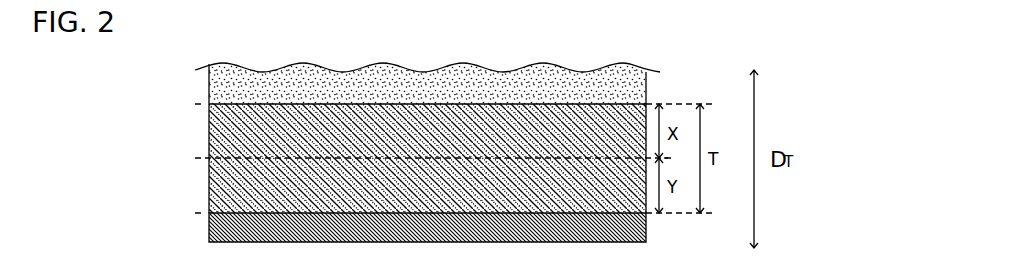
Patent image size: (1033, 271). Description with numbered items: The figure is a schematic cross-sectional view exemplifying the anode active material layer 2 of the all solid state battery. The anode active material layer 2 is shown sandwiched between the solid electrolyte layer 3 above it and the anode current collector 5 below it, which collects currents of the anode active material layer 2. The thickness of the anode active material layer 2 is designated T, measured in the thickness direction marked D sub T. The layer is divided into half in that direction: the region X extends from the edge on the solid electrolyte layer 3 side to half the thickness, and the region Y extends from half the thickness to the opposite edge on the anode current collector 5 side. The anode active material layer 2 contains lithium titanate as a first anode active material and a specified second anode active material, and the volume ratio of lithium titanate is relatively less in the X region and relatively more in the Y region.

The solid electrolyte layer 3 is at (221, 93).
The anode active material layer 2 is at (222, 138).
The anode current collector 5 is at (221, 231).